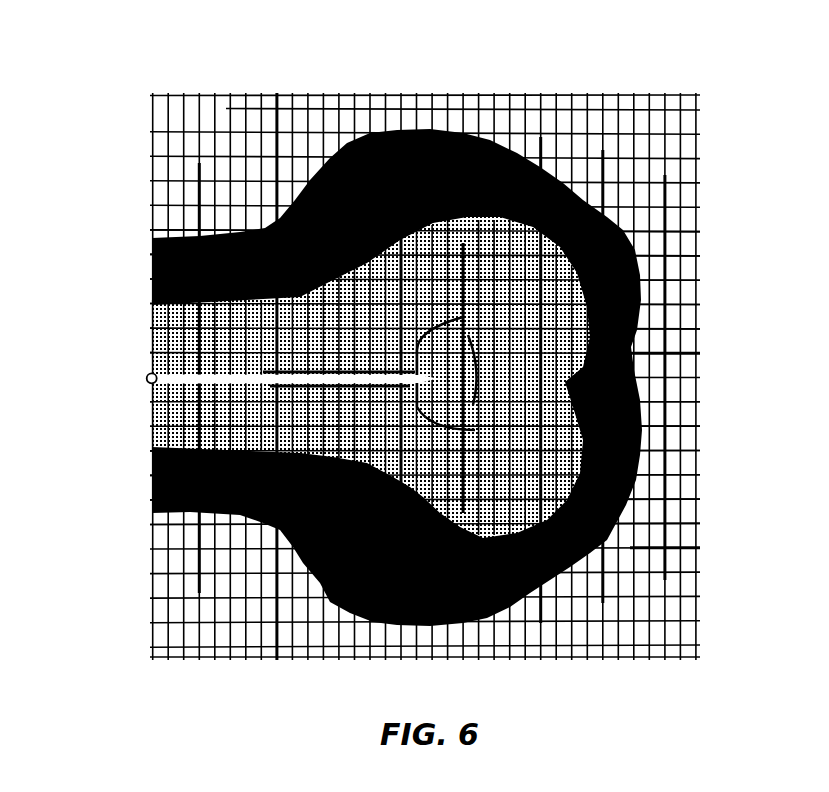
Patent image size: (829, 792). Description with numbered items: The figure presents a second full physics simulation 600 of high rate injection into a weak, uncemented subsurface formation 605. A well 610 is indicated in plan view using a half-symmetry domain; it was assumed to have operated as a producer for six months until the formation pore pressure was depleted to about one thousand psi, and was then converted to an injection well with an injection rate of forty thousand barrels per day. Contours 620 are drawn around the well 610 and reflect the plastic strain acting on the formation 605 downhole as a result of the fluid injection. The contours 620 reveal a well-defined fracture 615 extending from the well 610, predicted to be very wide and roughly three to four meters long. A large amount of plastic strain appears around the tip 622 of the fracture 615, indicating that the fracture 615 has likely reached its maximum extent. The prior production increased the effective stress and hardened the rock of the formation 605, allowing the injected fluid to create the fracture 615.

The full physics simulation 600 is at (92, 55).
The subsurface formation 605 is at (497, 124).
The well 610 is at (146, 382).
The fracture 615 is at (170, 384).
The contours 620 is at (622, 250).
The tip 622 is at (436, 377).